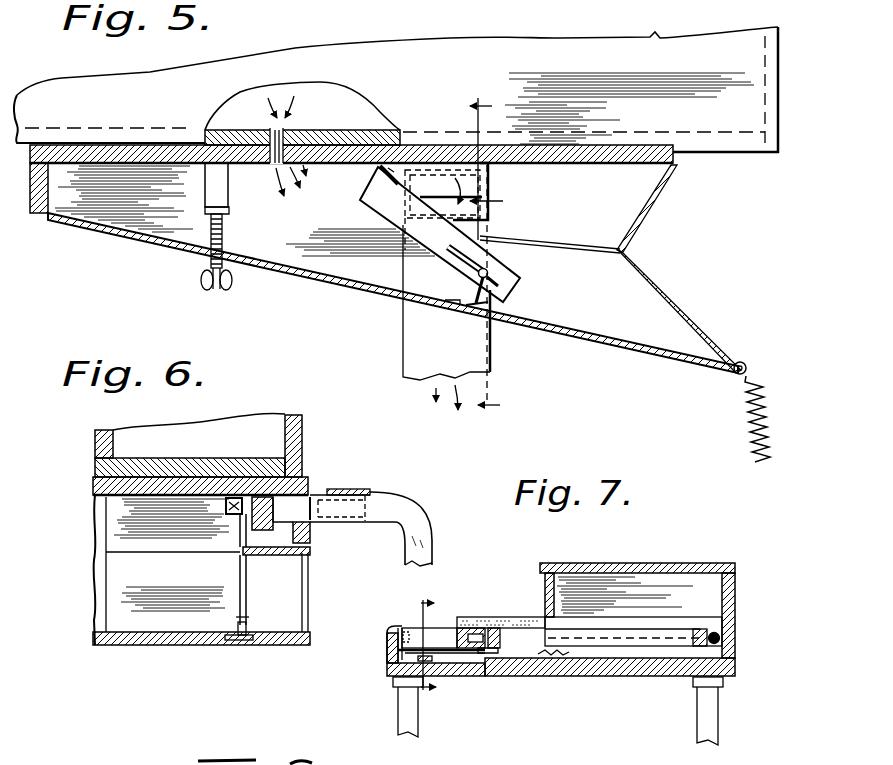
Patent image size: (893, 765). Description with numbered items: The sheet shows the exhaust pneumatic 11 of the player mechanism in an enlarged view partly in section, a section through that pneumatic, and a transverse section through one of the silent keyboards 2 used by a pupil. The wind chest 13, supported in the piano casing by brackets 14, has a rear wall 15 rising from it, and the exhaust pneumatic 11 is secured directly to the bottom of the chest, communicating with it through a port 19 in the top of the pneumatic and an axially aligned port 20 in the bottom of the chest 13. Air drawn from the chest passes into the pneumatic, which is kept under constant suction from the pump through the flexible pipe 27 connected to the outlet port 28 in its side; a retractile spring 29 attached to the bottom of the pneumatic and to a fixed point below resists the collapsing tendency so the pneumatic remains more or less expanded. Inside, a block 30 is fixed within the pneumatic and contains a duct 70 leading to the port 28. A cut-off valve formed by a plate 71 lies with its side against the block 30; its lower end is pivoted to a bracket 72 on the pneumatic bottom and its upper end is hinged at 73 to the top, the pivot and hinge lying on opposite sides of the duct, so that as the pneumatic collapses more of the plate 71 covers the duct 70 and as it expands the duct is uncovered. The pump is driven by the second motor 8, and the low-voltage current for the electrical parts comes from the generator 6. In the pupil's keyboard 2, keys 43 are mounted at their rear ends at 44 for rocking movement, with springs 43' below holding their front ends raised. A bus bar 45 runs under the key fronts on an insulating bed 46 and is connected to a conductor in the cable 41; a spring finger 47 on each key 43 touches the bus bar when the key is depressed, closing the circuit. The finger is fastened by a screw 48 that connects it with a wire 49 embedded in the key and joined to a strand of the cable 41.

In FIG. 5, the wind chest 13 is at (396, 89).
In FIG. 6, the wind chest 13 is at (258, 420).
In FIG. 5, the port 20 is at (284, 126).
In FIG. 5, the port 19 is at (232, 215).
In FIG. 5, the brackets 14 is at (221, 290).
In FIG. 5, the exhaust pneumatic 11 is at (394, 269).
In FIG. 6, the exhaust pneumatic 11 is at (95, 556).
In FIG. 5, the hinge 73 is at (374, 168).
In FIG. 6, the hinge 73 is at (226, 505).
In FIG. 5, the plate 71 is at (438, 250).
In FIG. 6, the plate 71 is at (240, 574).
In FIG. 5, the bracket 72 is at (492, 288).
In FIG. 6, the bracket 72 is at (236, 628).
In FIG. 5, the block 30 is at (490, 182).
In FIG. 6, the block 30 is at (283, 562).
In FIG. 5, the generator 6 is at (485, 252).
In FIG. 5, the flexible pipe 27 is at (415, 346).
In FIG. 6, the flexible pipe 27 is at (405, 553).
In FIG. 5, the retractile spring 29 is at (742, 436).
In FIG. 6, the rear wall 15 is at (302, 427).
In FIG. 6, the duct 70 is at (252, 540).
In FIG. 6, the outlet port 28 is at (312, 505).
In FIG. 7, the pivotal mounting 44 is at (690, 640).
In FIG. 7, the cable 41 is at (722, 646).
In FIG. 7, the keys 43 is at (473, 607).
In FIG. 7, the screw 48 is at (474, 634).
In FIG. 7, the wire 49 is at (494, 640).
In FIG. 7, the silent keyboard 2 is at (405, 628).
In FIG. 7, the bus bar 45 is at (445, 656).
In FIG. 7, the spring finger 47 is at (452, 660).
In FIG. 7, the bed 46 is at (488, 654).
In FIG. 7, the springs 43' is at (560, 685).
In FIG. 7, the second motor 8 is at (423, 645).